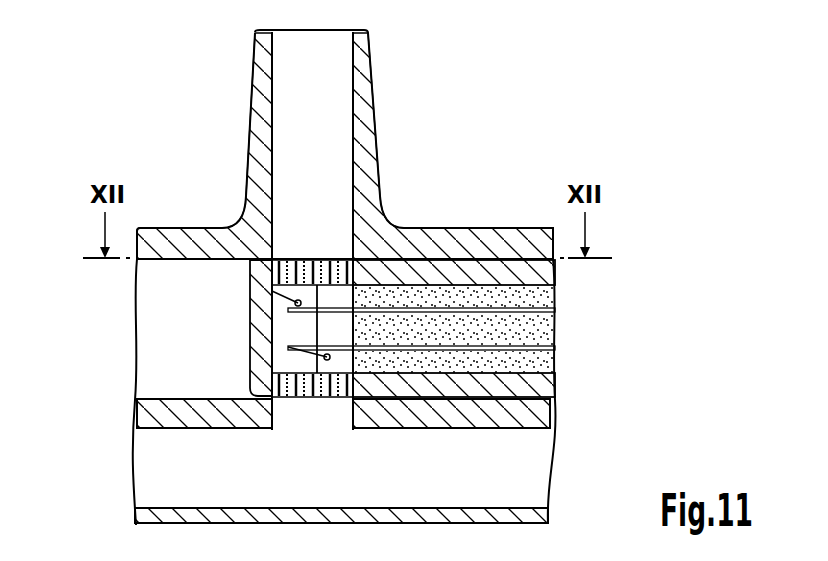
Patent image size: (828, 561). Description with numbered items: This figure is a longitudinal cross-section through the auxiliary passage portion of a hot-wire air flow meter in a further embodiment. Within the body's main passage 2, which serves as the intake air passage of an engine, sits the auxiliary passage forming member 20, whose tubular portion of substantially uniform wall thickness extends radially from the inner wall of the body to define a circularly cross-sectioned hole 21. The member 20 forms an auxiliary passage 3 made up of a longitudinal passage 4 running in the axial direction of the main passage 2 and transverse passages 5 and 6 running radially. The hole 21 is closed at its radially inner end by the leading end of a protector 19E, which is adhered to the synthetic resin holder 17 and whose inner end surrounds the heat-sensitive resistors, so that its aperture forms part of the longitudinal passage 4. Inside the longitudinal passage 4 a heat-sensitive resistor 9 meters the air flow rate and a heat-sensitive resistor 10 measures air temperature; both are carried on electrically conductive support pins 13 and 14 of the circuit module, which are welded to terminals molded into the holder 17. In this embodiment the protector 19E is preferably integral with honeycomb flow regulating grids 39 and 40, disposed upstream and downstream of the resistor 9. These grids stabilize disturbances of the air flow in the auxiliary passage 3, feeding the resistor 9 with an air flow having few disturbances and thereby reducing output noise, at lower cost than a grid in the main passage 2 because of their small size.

The main passage 2 is at (183, 223).
The auxiliary passage 3 is at (248, 231).
The longitudinal passage 4 is at (283, 101).
The honeycomb flow regulating grid 39 is at (316, 260).
The auxiliary passage forming member 20 is at (470, 230).
The heat-sensitive resistor 9 is at (272, 291).
The hole 21 is at (162, 282).
The protector 19E is at (250, 322).
The heat-sensitive resistor 10 is at (288, 348).
The honeycomb flow regulating grid 40 is at (272, 382).
The support pin 13 is at (555, 306).
The synthetic resin holder 17 is at (547, 332).
The support pin 14 is at (555, 353).
The transverse passage 5 is at (153, 467).
The transverse passage 6 is at (528, 464).